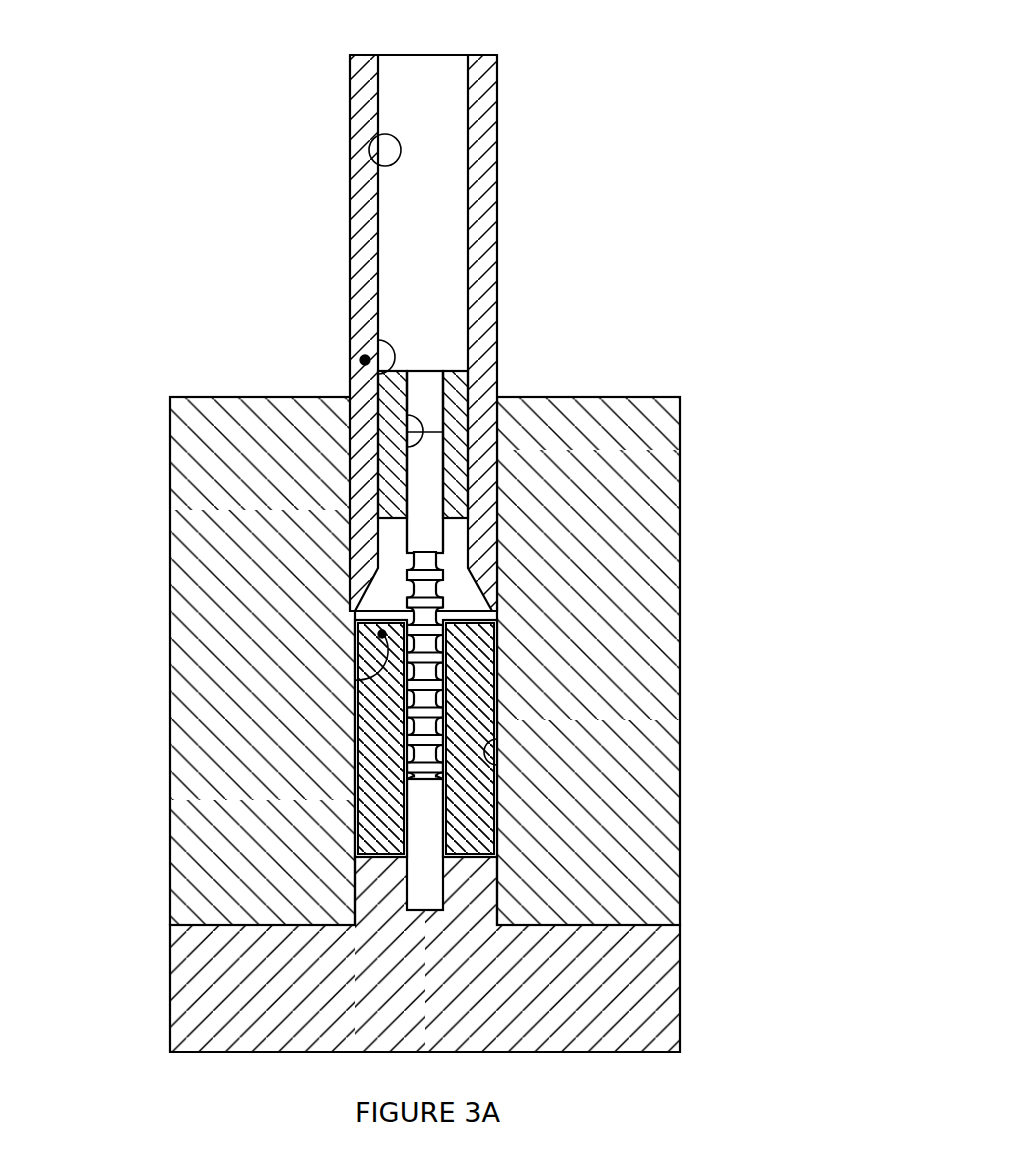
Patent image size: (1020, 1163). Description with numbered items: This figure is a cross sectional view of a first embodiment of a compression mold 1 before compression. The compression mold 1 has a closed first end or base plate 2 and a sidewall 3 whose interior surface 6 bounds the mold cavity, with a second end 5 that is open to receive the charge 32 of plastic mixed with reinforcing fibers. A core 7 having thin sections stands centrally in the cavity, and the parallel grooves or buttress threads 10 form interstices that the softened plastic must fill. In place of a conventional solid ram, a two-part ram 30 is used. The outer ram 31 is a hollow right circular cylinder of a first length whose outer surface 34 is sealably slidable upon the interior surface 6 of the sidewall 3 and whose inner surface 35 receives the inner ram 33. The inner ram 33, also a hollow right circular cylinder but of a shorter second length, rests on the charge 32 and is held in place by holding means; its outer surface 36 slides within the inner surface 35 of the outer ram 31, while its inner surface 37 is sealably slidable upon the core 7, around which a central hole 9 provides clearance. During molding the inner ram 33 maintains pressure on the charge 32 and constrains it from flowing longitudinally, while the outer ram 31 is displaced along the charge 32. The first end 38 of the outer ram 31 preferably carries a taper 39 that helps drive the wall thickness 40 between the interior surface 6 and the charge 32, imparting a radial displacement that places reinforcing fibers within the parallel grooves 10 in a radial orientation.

The compression mold 1 is at (501, 724).
The base plate 2 is at (682, 978).
The sidewall 3 is at (680, 570).
The second end 5 is at (532, 361).
The interior surface 6 is at (500, 775).
The core 7 is at (500, 817).
The central hole 9 is at (415, 403).
The parallel grooves or buttress threads 10 is at (447, 690).
The two-part ram 30 is at (312, 227).
The outer ram 31 is at (362, 358).
The charge 32 is at (355, 757).
The inner ram 33 is at (372, 322).
The outer surface 34 is at (350, 113).
The inner surface 35 is at (380, 163).
The outer surface 36 is at (378, 392).
The inner surface 37 is at (405, 446).
The first end 38 is at (355, 677).
The taper 39 is at (362, 628).
The wall thickness 40 is at (413, 184).